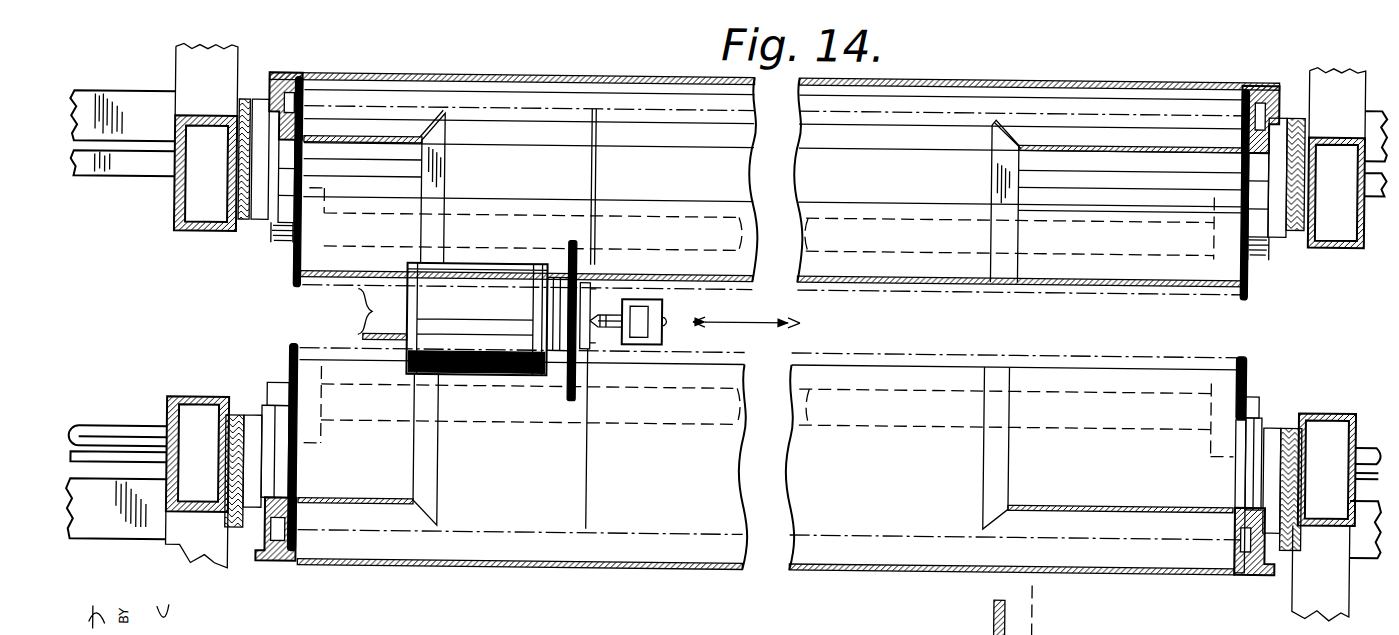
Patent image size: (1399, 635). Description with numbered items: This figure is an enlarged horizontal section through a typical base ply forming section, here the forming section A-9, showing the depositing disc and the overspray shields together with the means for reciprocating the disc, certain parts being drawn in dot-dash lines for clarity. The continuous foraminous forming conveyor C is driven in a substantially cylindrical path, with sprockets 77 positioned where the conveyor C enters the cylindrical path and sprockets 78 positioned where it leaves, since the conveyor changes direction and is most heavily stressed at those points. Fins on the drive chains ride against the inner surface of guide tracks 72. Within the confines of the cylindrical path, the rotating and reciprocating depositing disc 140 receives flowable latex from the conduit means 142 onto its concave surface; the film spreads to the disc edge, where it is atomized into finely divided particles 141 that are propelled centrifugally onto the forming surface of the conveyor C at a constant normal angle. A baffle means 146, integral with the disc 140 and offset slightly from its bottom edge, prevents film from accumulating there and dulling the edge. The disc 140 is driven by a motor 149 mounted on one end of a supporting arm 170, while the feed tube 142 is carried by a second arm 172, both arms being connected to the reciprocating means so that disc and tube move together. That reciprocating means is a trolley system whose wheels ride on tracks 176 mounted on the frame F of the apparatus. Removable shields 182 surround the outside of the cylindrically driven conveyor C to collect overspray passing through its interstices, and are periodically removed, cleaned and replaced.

The guide track 72 is at (288, 81).
The sprocket 77 is at (293, 267).
The sprocket 78 is at (290, 364).
The depositing disc 140 is at (596, 292).
The elastomeric material particles 141 is at (608, 160).
The conduit means 142 is at (688, 326).
The baffle means 146 is at (559, 250).
The motor 149 is at (480, 274).
The supporting arm 170 is at (347, 316).
The second arm 172 is at (282, 566).
The tracks 176 is at (88, 182).
The removable shields 182 is at (549, 80).
The foraminous forming conveyor C is at (690, 106).
The frame F is at (170, 245).
The base ply forming section A-9 is at (1038, 80).